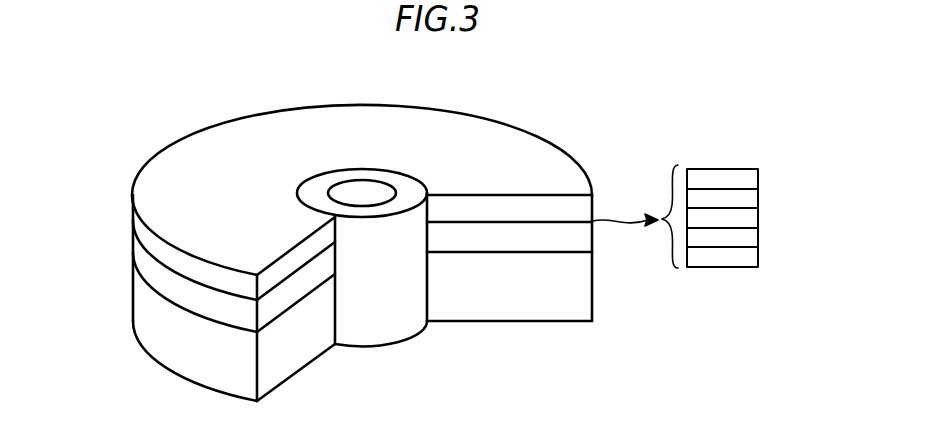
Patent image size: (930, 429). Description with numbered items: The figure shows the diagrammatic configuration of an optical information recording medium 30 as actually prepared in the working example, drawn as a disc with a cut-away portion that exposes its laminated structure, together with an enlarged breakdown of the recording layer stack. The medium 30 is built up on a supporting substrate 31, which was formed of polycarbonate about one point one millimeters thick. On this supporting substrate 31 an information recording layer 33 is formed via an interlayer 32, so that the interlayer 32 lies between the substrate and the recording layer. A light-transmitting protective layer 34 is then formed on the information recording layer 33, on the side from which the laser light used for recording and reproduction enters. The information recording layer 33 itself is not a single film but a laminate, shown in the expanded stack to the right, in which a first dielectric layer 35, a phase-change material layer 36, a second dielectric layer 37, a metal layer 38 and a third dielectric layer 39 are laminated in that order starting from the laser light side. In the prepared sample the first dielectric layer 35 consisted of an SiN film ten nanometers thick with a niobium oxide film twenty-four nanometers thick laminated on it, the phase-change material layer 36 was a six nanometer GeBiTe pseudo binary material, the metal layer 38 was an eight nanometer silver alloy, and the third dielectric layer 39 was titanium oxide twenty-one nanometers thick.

The optical information recording medium 30 is at (116, 88).
The supporting substrate 31 is at (135, 313).
The interlayer 32 is at (133, 252).
The information recording layer 33 is at (133, 245).
The light-transmitting protective layer 34 is at (133, 228).
The first dielectric layer 35 is at (752, 176).
The phase-change material layer 36 is at (752, 196).
The second dielectric layer 37 is at (752, 215).
The metal layer 38 is at (752, 235).
The third dielectric layer 39 is at (752, 255).